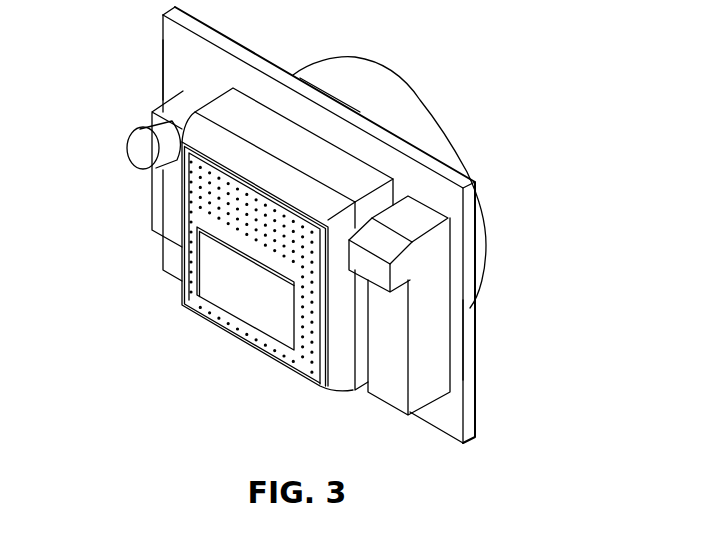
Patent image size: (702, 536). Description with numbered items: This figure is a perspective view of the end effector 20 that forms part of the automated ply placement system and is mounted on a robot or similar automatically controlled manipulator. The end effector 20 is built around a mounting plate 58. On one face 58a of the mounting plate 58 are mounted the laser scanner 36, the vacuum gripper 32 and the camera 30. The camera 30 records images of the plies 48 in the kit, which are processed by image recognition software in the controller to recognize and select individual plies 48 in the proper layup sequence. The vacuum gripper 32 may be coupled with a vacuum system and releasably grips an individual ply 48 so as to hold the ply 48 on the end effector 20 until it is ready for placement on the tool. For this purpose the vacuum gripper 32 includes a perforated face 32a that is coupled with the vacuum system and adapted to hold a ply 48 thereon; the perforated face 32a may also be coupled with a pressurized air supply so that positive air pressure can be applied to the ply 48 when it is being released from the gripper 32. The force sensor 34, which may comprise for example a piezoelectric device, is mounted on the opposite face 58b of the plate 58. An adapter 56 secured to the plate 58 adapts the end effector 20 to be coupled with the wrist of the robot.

The end effector 20 is at (536, 100).
The camera 30 is at (128, 126).
The vacuum gripper 32 is at (182, 281).
The perforated face 32a is at (178, 247).
The force sensor 34 is at (331, 122).
The scanner 36 is at (428, 320).
The ply 48 is at (252, 288).
The adapter 56 is at (423, 90).
The mounting plate 58 is at (180, 45).
The face of mounting plate 58a is at (176, 79).
The opposite face of mounting plate 58b is at (486, 340).